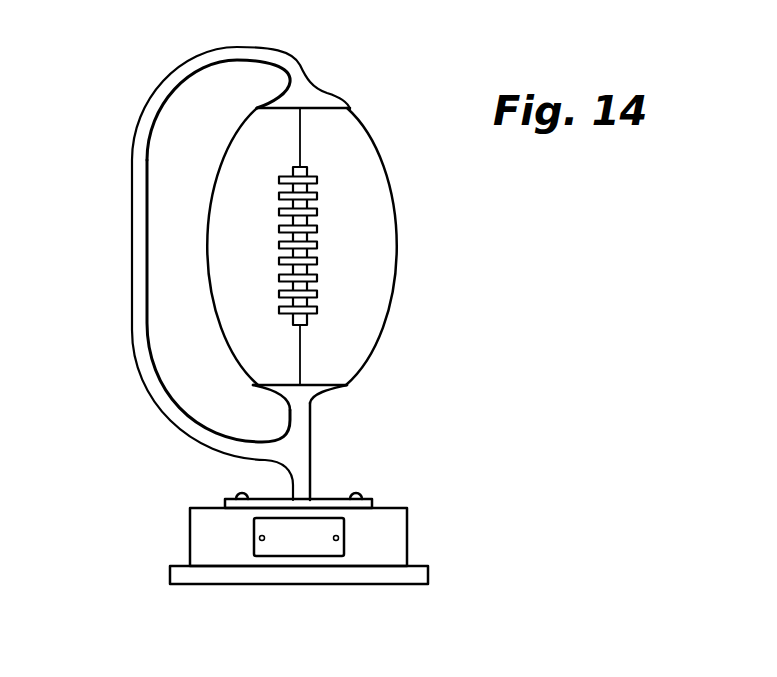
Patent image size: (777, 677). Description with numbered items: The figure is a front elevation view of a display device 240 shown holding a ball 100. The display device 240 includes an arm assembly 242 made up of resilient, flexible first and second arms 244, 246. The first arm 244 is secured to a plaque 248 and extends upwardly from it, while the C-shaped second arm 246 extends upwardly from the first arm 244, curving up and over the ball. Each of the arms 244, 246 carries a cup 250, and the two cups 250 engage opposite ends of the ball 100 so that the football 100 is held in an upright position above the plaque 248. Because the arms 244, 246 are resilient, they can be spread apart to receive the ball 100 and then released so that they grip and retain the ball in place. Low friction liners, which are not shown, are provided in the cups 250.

The ball 100 is at (370, 216).
The display device 240 is at (102, 219).
The arm assembly 242 is at (142, 403).
The first arm 244 is at (311, 448).
The second arm 246 is at (170, 80).
The plaque 248 is at (408, 533).
The cups 250 is at (333, 92).